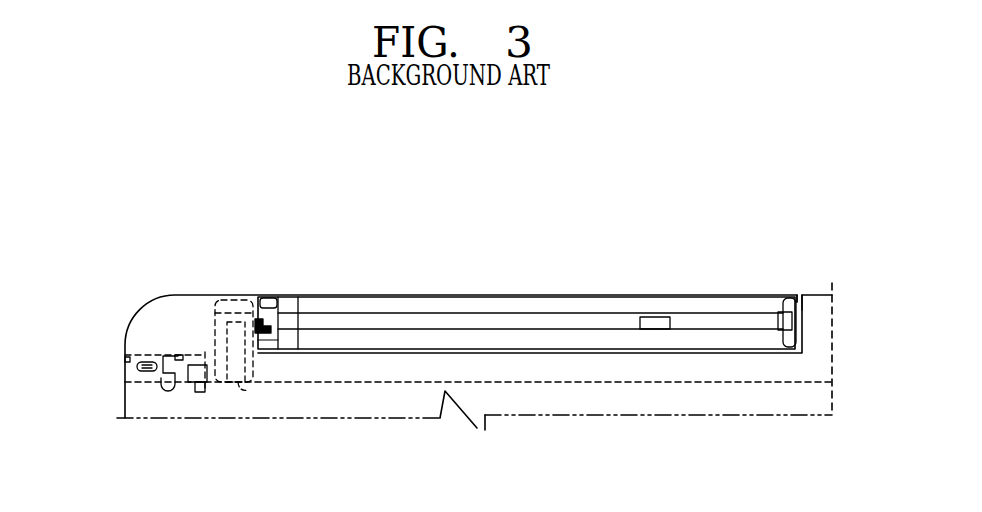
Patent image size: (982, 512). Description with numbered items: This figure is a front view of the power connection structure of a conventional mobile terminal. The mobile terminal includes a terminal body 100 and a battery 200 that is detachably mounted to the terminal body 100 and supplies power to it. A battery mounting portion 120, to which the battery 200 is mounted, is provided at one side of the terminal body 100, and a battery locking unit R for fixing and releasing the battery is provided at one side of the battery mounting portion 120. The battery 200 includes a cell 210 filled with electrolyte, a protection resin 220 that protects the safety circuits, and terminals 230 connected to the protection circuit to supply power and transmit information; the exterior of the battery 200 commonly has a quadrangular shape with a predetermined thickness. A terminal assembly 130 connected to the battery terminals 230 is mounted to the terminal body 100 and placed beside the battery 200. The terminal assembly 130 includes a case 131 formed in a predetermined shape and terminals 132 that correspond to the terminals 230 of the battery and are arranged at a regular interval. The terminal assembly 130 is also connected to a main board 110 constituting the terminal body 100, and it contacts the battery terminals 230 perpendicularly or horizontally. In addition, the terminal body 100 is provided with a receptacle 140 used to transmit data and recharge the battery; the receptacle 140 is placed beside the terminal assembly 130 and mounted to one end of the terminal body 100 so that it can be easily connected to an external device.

The terminal body 100 is at (812, 294).
The main board 110 is at (697, 374).
The battery mounting portion 120 is at (587, 349).
The terminal assembly 130 is at (208, 326).
The case 131 is at (232, 300).
The terminals 132 is at (260, 319).
The receptacle 140 is at (144, 346).
The battery 200 is at (532, 288).
The cell 210 is at (435, 300).
The protection resin 220 is at (272, 343).
The terminals 230 is at (274, 318).
The battery locking unit R is at (793, 296).